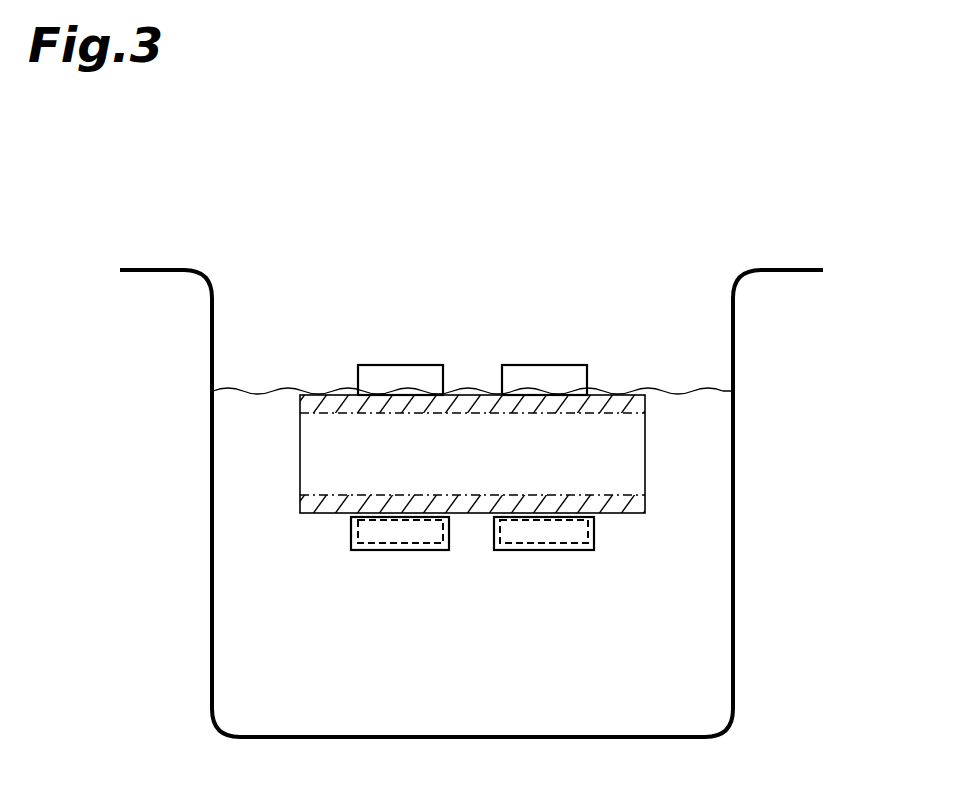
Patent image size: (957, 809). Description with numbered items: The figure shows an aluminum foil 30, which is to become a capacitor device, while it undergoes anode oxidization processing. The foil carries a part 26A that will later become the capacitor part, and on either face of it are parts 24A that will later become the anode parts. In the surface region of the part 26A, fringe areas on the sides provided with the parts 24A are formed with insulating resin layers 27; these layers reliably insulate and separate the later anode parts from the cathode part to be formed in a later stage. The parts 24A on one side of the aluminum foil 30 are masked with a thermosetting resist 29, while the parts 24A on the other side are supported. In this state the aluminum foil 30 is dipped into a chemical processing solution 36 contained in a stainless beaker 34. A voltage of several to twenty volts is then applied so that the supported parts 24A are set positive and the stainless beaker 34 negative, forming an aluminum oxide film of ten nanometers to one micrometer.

The parts to become the anode parts 24A is at (397, 372).
The part to become the capacitor part 26A is at (607, 428).
The insulating resin layer 27 is at (302, 404).
The thermosetting resist 29 is at (372, 553).
The aluminum foil 30 is at (533, 439).
The stainless beaker 34 is at (733, 620).
The chemical processing solution 36 is at (277, 388).